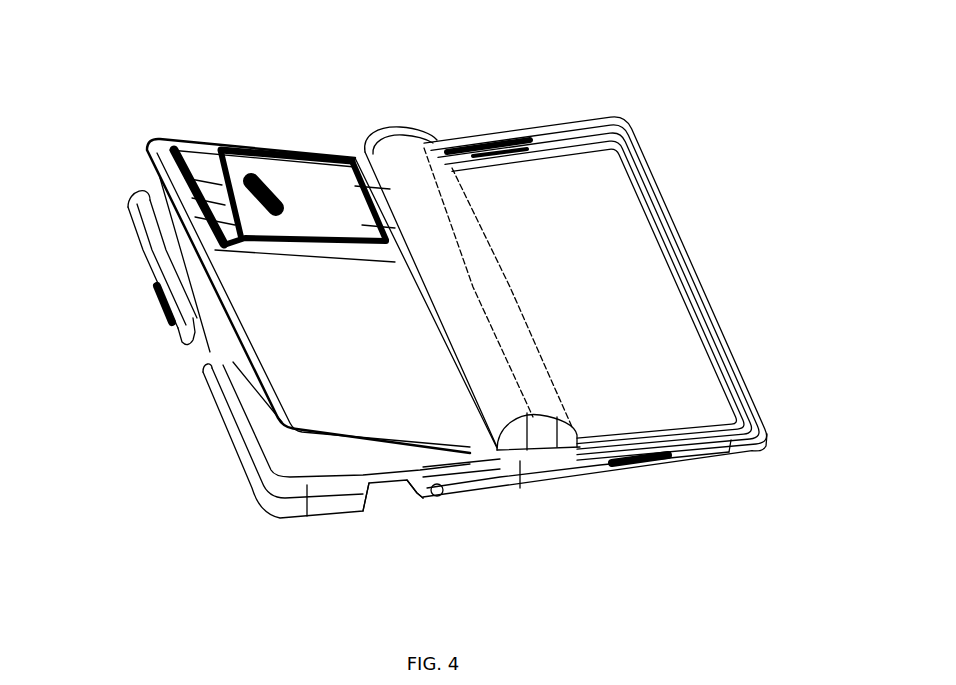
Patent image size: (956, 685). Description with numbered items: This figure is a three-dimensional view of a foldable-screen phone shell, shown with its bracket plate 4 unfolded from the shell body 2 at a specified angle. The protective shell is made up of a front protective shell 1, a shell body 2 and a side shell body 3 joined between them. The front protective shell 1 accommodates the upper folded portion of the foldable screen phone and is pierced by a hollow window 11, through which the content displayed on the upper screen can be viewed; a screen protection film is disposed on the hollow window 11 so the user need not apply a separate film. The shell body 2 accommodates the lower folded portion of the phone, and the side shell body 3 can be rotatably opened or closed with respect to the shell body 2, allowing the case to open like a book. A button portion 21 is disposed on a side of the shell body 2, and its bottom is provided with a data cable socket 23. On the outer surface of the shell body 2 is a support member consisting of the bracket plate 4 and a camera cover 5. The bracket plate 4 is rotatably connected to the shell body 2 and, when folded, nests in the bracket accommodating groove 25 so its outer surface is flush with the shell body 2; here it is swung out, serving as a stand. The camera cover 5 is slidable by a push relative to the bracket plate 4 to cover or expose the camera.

The front protective shell 1 is at (668, 228).
The hollow window 11 is at (686, 350).
The shell body 2 is at (143, 258).
The button portion 21 is at (162, 306).
The data cable socket 23 is at (397, 500).
The bracket accommodating groove 25 is at (243, 407).
The side shell body 3 is at (417, 177).
The bracket plate 4 is at (281, 333).
The camera cover 5 is at (294, 181).